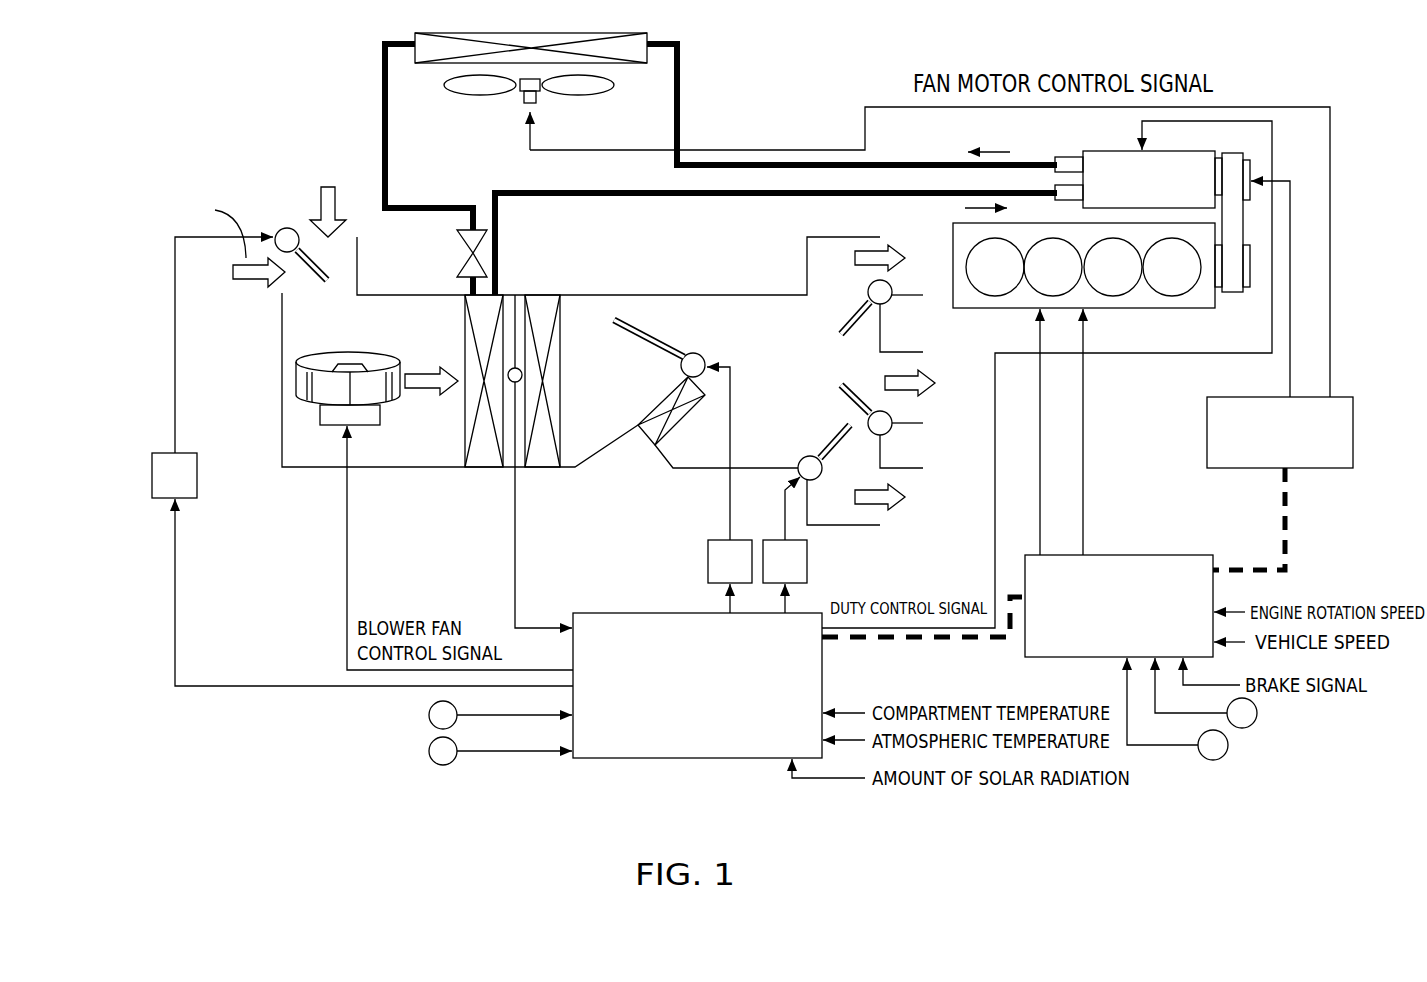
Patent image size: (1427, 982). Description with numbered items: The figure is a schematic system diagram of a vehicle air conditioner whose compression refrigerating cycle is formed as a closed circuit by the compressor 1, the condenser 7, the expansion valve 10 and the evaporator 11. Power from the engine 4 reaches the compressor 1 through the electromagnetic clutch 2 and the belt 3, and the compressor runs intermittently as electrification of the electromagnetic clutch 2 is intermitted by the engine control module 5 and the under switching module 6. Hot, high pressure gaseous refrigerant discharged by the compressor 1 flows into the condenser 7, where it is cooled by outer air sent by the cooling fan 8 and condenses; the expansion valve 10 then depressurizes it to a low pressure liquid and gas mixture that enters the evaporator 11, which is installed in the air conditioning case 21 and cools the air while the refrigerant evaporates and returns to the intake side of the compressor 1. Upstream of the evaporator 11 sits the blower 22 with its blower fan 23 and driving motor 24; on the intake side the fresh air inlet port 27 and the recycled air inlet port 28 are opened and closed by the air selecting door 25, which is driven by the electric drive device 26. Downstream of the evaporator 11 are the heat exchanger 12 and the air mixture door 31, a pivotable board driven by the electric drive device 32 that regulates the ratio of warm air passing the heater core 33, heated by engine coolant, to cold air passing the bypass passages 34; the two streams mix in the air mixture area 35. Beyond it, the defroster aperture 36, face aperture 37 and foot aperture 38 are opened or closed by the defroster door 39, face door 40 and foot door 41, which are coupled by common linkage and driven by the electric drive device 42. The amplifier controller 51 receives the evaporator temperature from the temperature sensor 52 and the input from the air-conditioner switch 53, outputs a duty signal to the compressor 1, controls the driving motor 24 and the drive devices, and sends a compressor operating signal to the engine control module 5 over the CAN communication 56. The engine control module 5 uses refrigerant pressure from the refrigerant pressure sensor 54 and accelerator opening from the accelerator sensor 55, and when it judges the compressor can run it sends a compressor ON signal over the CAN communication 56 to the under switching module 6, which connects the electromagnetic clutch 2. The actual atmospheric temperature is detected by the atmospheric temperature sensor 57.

The compressor 1 is at (1118, 165).
The electromagnetic clutch 2 is at (1222, 153).
The belt 3 is at (1235, 292).
The engine 4 is at (1108, 303).
The engine control module 5 is at (1185, 565).
The under switching module 6 is at (1218, 412).
The condenser 7 is at (630, 52).
The cooling fan 8 is at (487, 90).
The expansion valve 10 is at (457, 262).
The evaporator 11 is at (486, 468).
The heat exchanger 12 is at (546, 468).
The air conditioning case 21 is at (610, 293).
The blower 22 is at (346, 390).
The blower fan 23 is at (375, 360).
The driving motor 24 is at (372, 414).
The air selecting door 25 is at (304, 272).
The electric drive device 26 is at (192, 480).
The fresh air inlet port 27 is at (312, 237).
The recycled air inlet port 28 is at (283, 282).
The air mixture door 31 is at (660, 350).
The electric drive device 32 is at (752, 536).
The heater core 33 is at (648, 432).
The bypass passages 34 is at (690, 326).
The air mixture area 35 is at (757, 353).
The defroster aperture 36 is at (830, 295).
The face aperture 37 is at (880, 378).
The foot aperture 38 is at (852, 470).
The defroster door 39 is at (852, 320).
The face door 40 is at (845, 404).
The foot door 41 is at (834, 432).
The electric drive device 42 is at (797, 570).
The amplifier controller 51 is at (605, 613).
The temperature sensor 52 is at (516, 294).
The air-conditioner switch 53 is at (430, 713).
The refrigerant pressure sensor 54 is at (1243, 727).
The accelerator sensor 55 is at (1225, 750).
The CAN communication 56 is at (1290, 528).
The atmospheric temperature sensor 57 is at (430, 749).